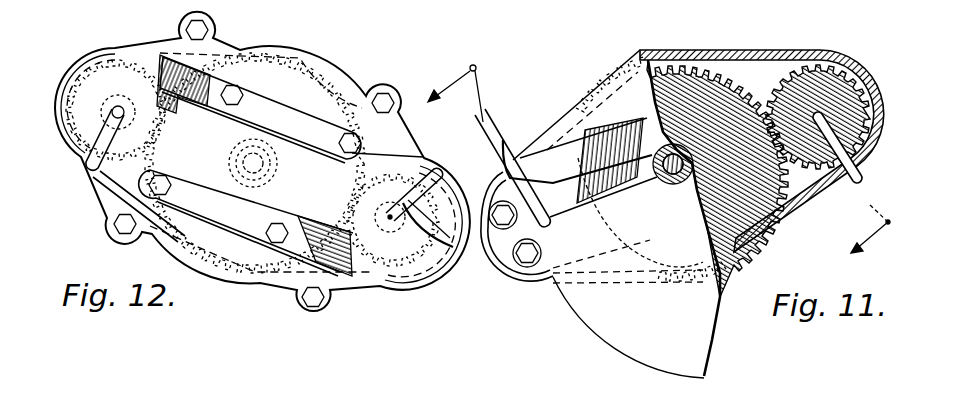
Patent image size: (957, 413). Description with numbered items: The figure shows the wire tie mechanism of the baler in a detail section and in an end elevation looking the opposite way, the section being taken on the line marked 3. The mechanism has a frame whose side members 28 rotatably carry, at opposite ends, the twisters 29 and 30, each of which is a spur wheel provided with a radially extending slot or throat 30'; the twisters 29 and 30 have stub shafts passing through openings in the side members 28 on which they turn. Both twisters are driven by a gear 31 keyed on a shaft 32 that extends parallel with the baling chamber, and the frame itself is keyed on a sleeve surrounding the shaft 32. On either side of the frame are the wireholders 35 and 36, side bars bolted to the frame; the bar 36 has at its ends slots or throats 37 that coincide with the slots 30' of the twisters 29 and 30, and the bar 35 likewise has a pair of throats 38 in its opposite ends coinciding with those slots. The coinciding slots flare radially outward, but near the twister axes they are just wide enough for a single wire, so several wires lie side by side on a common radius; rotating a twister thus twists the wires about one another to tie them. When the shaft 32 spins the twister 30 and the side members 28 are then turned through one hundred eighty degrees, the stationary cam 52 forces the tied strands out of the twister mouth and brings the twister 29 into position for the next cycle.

In FIG. 12, the side members 28 is at (390, 150).
In FIG. 12, the twister 29 is at (94, 81).
In FIG. 11, the twister 29 is at (824, 80).
In FIG. 12, the twister 30 is at (393, 248).
In FIG. 11, the twister 30 is at (512, 167).
In FIG. 12, the slot or throat 30' is at (441, 201).
In FIG. 11, the slot or throat 30' is at (845, 157).
In FIG. 12, the gear 31 is at (307, 83).
In FIG. 11, the gear 31 is at (733, 252).
In FIG. 12, the shaft 32 is at (266, 163).
In FIG. 11, the shaft 32 is at (670, 178).
In FIG. 11, the wireholder 35 is at (558, 157).
In FIG. 12, the wireholder 36 is at (92, 176).
In FIG. 12, the slots or throats 37 is at (93, 116).
In FIG. 11, the throats 38 is at (513, 205).
In FIG. 11, the stationary cam 52 is at (612, 352).
In FIG. 12, the section line 3 is at (455, 93).
In FIG. 11, the section line 3 is at (870, 231).